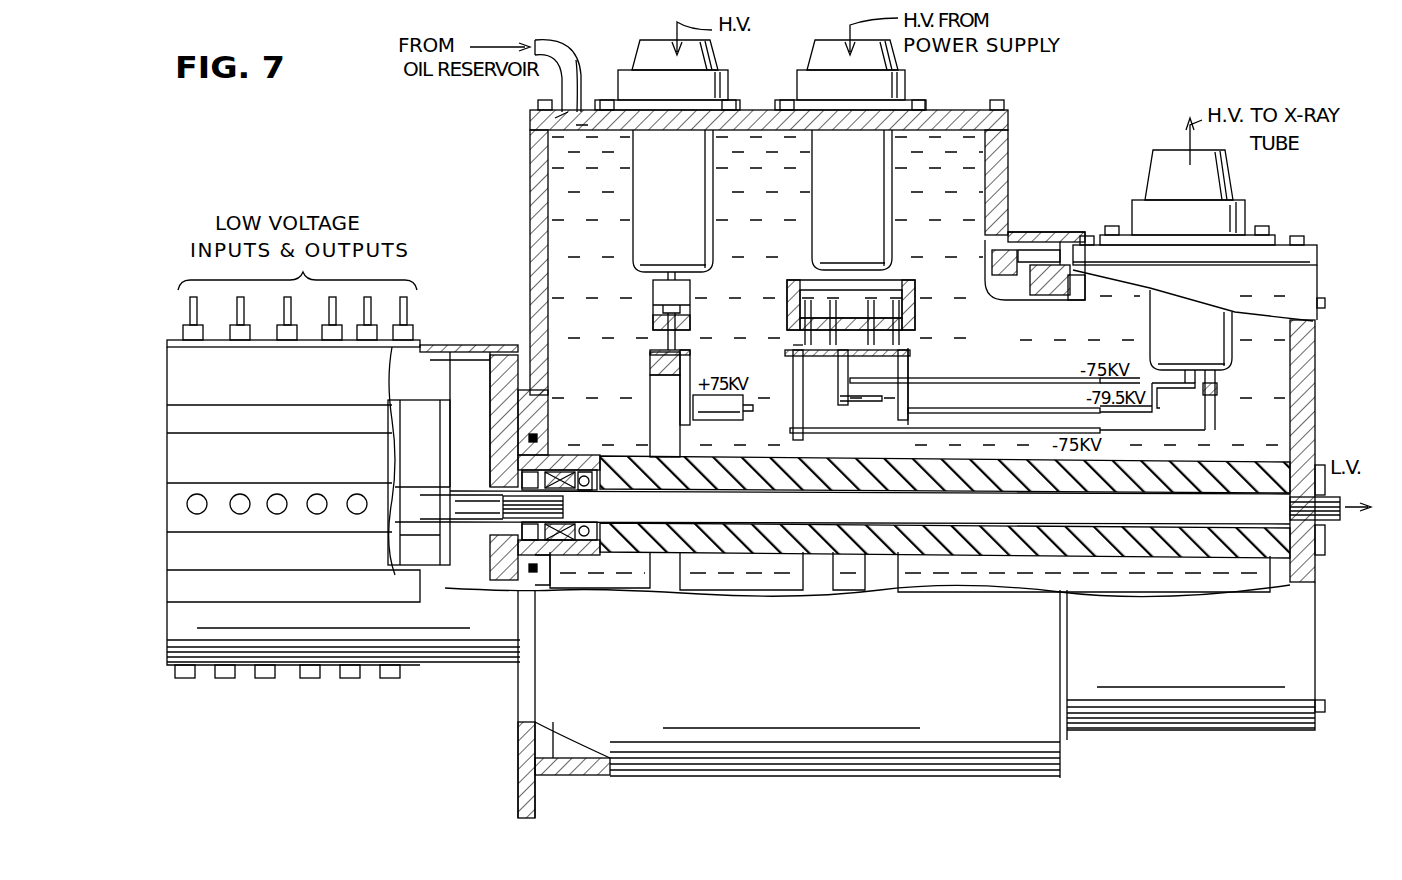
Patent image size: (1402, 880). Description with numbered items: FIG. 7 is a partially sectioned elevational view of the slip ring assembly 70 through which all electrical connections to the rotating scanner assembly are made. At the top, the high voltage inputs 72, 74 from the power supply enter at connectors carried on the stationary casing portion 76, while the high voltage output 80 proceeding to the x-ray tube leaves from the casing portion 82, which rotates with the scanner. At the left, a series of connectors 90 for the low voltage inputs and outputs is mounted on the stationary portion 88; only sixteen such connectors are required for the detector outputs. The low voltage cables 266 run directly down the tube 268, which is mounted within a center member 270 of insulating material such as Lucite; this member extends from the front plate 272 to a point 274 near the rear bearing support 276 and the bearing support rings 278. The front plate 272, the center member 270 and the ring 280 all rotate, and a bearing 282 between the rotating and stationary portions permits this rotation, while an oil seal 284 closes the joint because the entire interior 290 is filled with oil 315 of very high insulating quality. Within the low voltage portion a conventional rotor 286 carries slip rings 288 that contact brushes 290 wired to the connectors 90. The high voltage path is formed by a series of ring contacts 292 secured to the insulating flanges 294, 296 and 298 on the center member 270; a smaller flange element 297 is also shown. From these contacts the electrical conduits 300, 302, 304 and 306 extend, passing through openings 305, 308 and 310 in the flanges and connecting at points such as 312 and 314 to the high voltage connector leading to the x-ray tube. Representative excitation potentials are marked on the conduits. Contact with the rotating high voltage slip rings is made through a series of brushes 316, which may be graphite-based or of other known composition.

The slip ring assembly 70 is at (1109, 96).
The high voltage input line 72 is at (905, 86).
The high voltage input line 74 is at (618, 72).
The casing portion 76 is at (762, 110).
The high voltage output cable 80 is at (1230, 185).
The casing portion 82 is at (1198, 679).
The low voltage portion 88 is at (300, 389).
The low voltage connectors 90 is at (407, 308).
The low voltage cables 266 is at (563, 507).
The tube 268 is at (1137, 540).
The center member 270 is at (1237, 548).
The front plate 272 is at (1305, 445).
The point 274 is at (605, 468).
The rear bearing support 276 is at (597, 470).
The bearing support rings 278 is at (568, 555).
The ring 280 is at (1050, 296).
The bearing 282 is at (985, 278).
The oil seal 284 is at (1078, 300).
The rotor 286 is at (385, 474).
The slip rings 288 is at (398, 420).
The brushes 290 is at (965, 180).
The ring contacts 292 is at (682, 356).
The flange 294 is at (650, 372).
The flange 296 is at (820, 376).
The insulator 297 is at (800, 348).
The flange 298 is at (940, 374).
The electrical conduit 300 is at (727, 422).
The electrical conduit 302 is at (1024, 386).
The electrical conduit 304 is at (1070, 410).
The opening 305 is at (664, 408).
The electrical conduit 306 is at (1162, 405).
The opening 308 is at (822, 407).
The opening 310 is at (912, 398).
The connection point 312 is at (1215, 408).
The connection point 314 is at (1217, 390).
The oil 315 is at (778, 251).
The brushes 316 is at (665, 350).